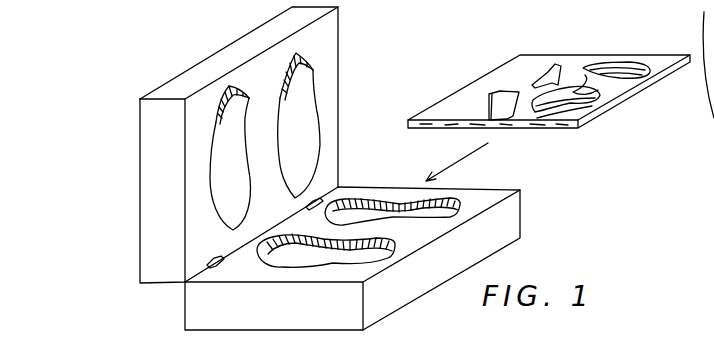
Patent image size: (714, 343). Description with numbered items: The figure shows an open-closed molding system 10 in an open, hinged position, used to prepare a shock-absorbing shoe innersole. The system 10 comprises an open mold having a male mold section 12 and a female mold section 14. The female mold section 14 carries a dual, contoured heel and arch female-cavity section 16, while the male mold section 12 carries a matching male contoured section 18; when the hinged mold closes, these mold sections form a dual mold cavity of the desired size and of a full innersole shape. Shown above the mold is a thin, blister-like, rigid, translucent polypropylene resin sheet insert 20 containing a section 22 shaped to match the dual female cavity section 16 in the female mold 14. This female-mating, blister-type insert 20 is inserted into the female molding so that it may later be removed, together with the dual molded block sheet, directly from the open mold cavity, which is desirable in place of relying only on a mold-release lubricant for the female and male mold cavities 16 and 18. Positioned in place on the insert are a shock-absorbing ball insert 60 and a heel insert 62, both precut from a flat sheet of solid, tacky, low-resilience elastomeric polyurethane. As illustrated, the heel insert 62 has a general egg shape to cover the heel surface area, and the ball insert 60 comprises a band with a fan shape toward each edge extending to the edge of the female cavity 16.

The open-closed molding system 10 is at (82, 67).
The male mold section 12 is at (152, 205).
The female mold section 14 is at (216, 318).
The female-cavity section 16 is at (400, 246).
The male contoured section 18 is at (293, 97).
The polypropylene resin sheet insert 20 is at (450, 86).
The section 22 is at (592, 82).
The shock-absorbing ball insert 60 is at (549, 55).
The heel insert 62 is at (633, 110).